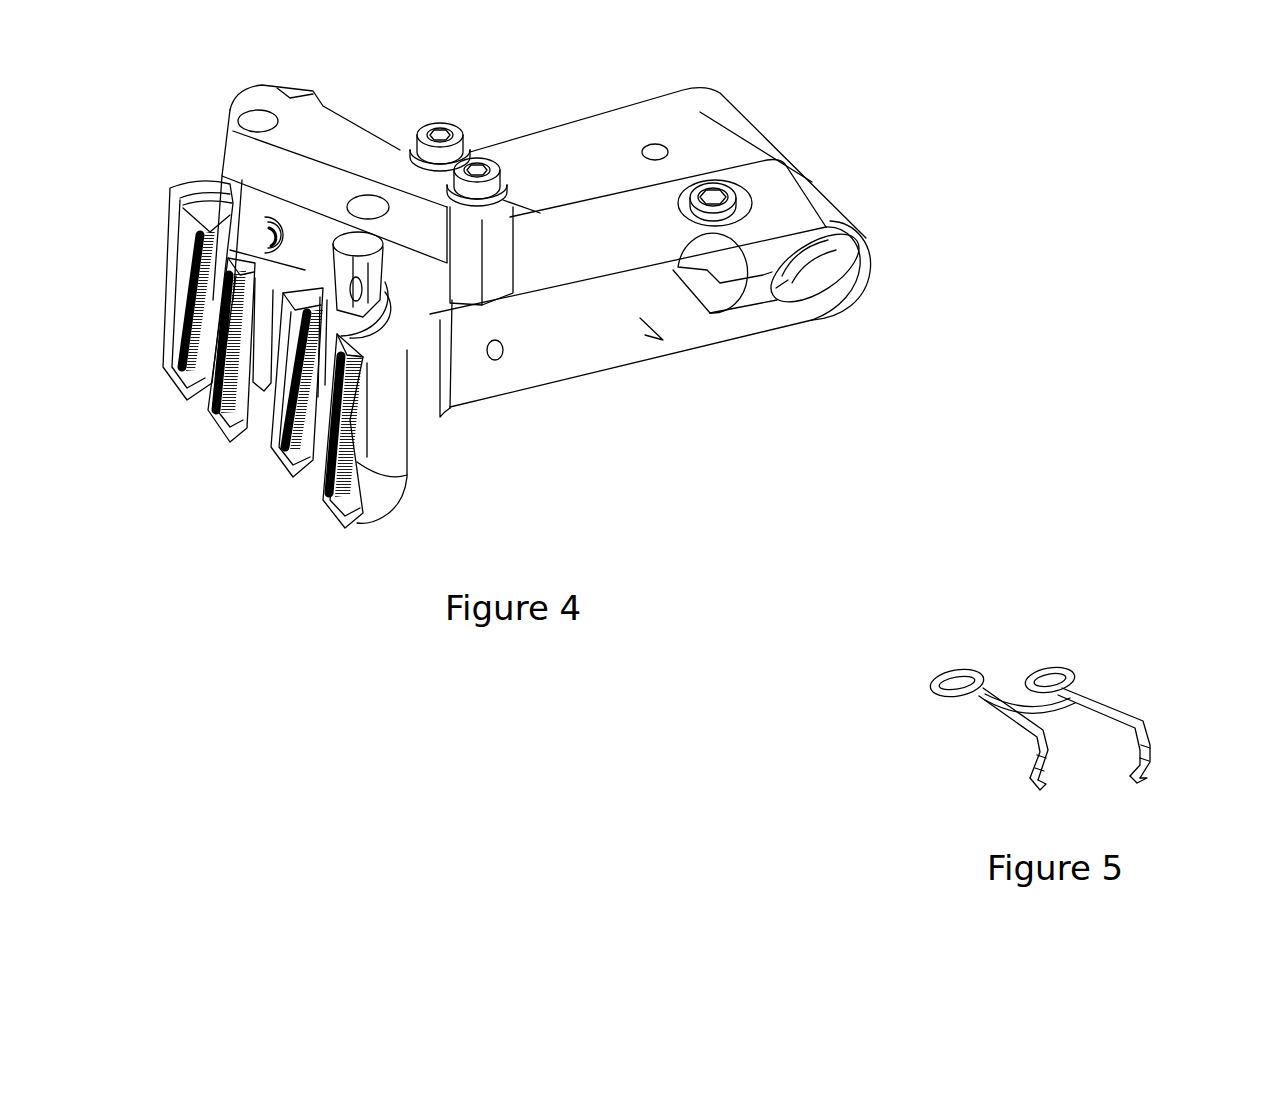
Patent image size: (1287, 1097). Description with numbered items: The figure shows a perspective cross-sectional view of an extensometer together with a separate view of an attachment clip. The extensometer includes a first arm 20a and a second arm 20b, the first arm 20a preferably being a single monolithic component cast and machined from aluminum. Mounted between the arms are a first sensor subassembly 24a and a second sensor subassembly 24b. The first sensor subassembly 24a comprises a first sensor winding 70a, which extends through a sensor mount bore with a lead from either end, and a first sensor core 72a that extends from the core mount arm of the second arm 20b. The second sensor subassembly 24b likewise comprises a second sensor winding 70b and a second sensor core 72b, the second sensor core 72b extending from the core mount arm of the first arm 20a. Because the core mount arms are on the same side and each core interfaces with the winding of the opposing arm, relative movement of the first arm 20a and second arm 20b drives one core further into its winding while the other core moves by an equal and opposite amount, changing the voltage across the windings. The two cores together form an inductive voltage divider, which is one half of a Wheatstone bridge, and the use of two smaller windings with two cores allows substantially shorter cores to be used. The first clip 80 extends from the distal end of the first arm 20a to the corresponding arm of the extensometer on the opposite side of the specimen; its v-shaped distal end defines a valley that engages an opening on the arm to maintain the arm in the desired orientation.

In FIG. 4, the first arm 20a is at (606, 376).
In FIG. 4, the second arm 20b is at (574, 122).
In FIG. 4, the first sensor subassembly 24a is at (356, 420).
In FIG. 4, the second sensor subassembly 24b is at (209, 323).
In FIG. 4, the first sensor winding 70a is at (331, 443).
In FIG. 4, the second sensor winding 70b is at (216, 416).
In FIG. 4, the first sensor core 72a is at (321, 383).
In FIG. 4, the second sensor core 72b is at (217, 246).
In FIG. 5, the first clip 80 is at (1138, 703).